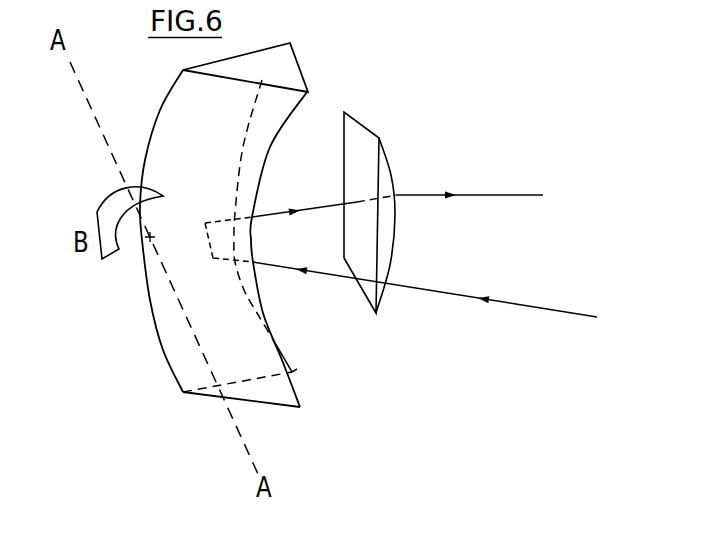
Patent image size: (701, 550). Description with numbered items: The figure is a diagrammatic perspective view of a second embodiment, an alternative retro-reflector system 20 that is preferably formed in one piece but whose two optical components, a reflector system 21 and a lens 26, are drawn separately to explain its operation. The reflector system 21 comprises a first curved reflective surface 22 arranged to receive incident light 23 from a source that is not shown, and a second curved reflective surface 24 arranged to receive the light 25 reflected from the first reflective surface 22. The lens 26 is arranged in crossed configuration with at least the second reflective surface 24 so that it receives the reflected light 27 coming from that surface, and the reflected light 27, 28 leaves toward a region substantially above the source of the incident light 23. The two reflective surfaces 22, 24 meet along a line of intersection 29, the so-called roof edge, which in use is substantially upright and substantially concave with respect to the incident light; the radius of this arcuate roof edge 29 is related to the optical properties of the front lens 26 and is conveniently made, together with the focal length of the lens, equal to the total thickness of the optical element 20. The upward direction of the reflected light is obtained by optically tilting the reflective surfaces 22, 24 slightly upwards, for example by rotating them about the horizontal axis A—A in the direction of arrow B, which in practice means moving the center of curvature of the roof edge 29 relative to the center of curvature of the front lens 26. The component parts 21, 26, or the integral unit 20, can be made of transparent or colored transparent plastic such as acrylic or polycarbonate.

The retro-reflector system 20 is at (400, 53).
The reflector system 21 is at (158, 89).
The first curved reflective surface 22 is at (285, 82).
The incident light 23 is at (443, 293).
The second curved reflective surface 24 is at (262, 63).
The light reflected from first reflective surface 25 is at (212, 258).
The lens 26 is at (383, 157).
The reflected light from second reflective surface 27 is at (320, 204).
The reflected light 28 is at (478, 195).
The line of intersection (roof edge) 29 is at (168, 354).